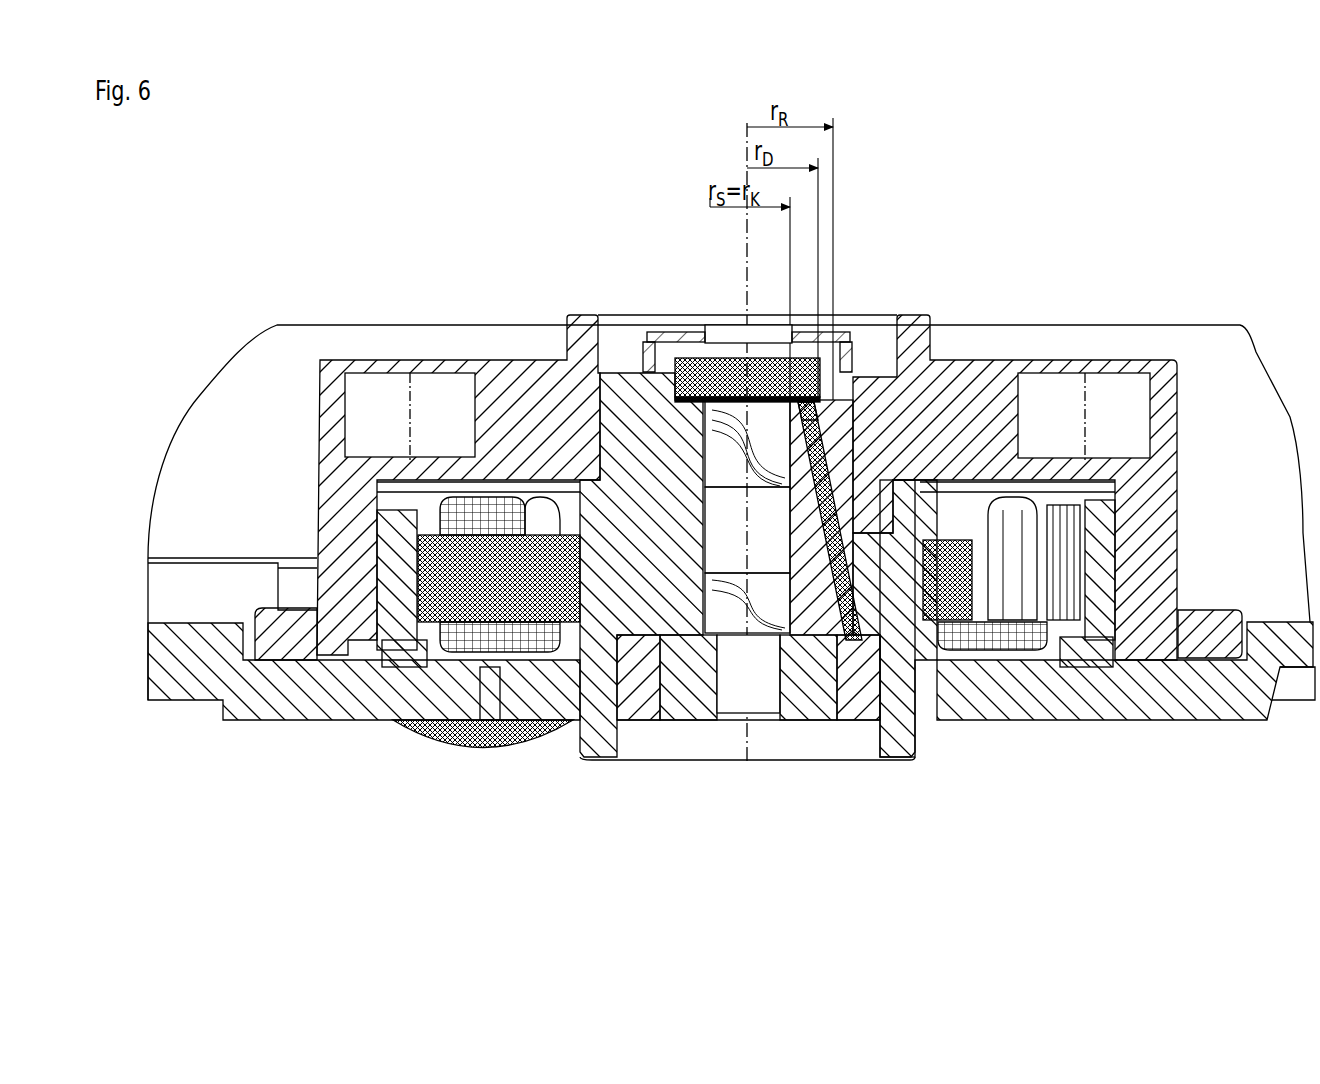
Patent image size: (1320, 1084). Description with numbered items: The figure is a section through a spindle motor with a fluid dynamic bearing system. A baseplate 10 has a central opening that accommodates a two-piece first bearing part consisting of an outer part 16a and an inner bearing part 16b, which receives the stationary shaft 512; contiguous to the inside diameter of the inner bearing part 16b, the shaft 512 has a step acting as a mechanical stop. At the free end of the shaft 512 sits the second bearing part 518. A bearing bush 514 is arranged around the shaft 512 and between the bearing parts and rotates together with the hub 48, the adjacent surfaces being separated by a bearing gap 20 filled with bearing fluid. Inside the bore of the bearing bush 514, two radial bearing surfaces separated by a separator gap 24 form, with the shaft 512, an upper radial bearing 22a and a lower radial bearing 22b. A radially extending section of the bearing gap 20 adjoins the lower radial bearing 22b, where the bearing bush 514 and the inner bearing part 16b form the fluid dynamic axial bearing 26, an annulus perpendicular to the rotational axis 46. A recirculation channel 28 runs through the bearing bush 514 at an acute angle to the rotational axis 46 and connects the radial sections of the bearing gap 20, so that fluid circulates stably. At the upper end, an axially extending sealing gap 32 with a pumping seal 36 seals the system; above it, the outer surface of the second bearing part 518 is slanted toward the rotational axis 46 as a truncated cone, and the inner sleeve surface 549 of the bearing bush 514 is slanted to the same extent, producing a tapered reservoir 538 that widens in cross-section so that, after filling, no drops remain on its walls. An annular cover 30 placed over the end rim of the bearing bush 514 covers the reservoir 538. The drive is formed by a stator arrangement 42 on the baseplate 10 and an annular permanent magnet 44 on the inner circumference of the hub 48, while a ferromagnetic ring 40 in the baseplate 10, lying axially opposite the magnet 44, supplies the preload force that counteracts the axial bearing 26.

The baseplate 10 is at (233, 680).
The hub 48 is at (320, 372).
The bearing bush 514 is at (495, 365).
The annular cover 30 is at (580, 340).
The sealing gap 32 is at (598, 375).
The reservoir 538 is at (650, 338).
The shaft 512 is at (707, 335).
The rotational axis 46 is at (735, 358).
The pumping seal 36 is at (848, 340).
The inner sleeve surface 549 is at (825, 333).
The second bearing part 518 is at (840, 397).
The upper fluid dynamic radial bearing 22a is at (835, 470).
The bearing gap 20 is at (880, 440).
The separator gap 24 is at (930, 467).
The annular permanent magnet 44 is at (355, 665).
The ferromagnetic ring 40 is at (397, 668).
The stator arrangement 42 is at (422, 667).
The outer part of first bearing part 16a is at (645, 670).
The inner bearing part 16b is at (697, 672).
The lower fluid dynamic radial bearing 22b is at (823, 650).
The fluid dynamic axial bearing 26 is at (848, 640).
The recirculation channel 28 is at (872, 640).